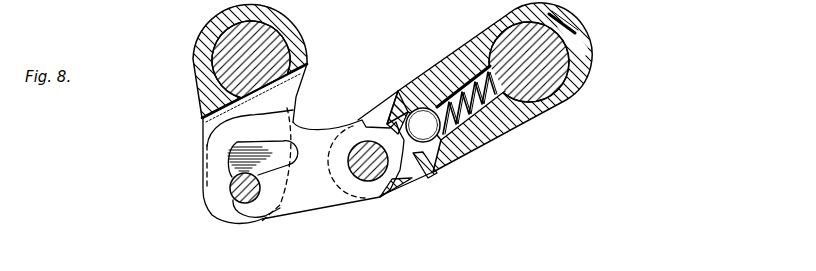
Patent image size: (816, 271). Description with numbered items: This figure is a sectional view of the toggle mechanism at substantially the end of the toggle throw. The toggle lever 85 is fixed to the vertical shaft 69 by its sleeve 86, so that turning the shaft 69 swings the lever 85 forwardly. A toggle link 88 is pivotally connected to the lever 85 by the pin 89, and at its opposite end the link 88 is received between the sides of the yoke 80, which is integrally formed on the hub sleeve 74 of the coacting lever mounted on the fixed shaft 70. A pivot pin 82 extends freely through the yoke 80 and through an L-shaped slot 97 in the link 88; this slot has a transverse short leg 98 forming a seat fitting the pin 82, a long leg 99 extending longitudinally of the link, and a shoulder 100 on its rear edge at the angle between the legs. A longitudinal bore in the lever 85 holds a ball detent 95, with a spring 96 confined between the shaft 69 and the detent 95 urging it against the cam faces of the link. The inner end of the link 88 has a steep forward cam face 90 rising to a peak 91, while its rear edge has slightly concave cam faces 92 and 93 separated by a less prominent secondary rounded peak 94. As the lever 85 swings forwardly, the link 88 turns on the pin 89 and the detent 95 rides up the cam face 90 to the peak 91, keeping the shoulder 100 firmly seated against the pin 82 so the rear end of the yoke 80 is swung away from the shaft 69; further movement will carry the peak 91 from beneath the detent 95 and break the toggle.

The vertical shaft 69 is at (549, 90).
The shaft 70 is at (271, 71).
The hub sleeve 74 is at (306, 67).
The yoke 80 is at (291, 108).
The pivot pin 82 is at (243, 203).
The toggle lever 85 is at (468, 138).
The sleeve 86 is at (575, 90).
The toggle link 88 is at (314, 198).
The pin 89 is at (372, 180).
The cam face 90 is at (372, 120).
The peak 91 is at (394, 121).
The cam face 92 is at (425, 173).
The cam face 93 is at (392, 192).
The secondary rounded peak 94 is at (410, 182).
The ball detent 95 is at (423, 125).
The spring 96 is at (459, 68).
The L-shaped slot 97 is at (224, 160).
The short leg 98 is at (252, 197).
The long leg 99 is at (259, 141).
The shoulder 100 is at (261, 183).